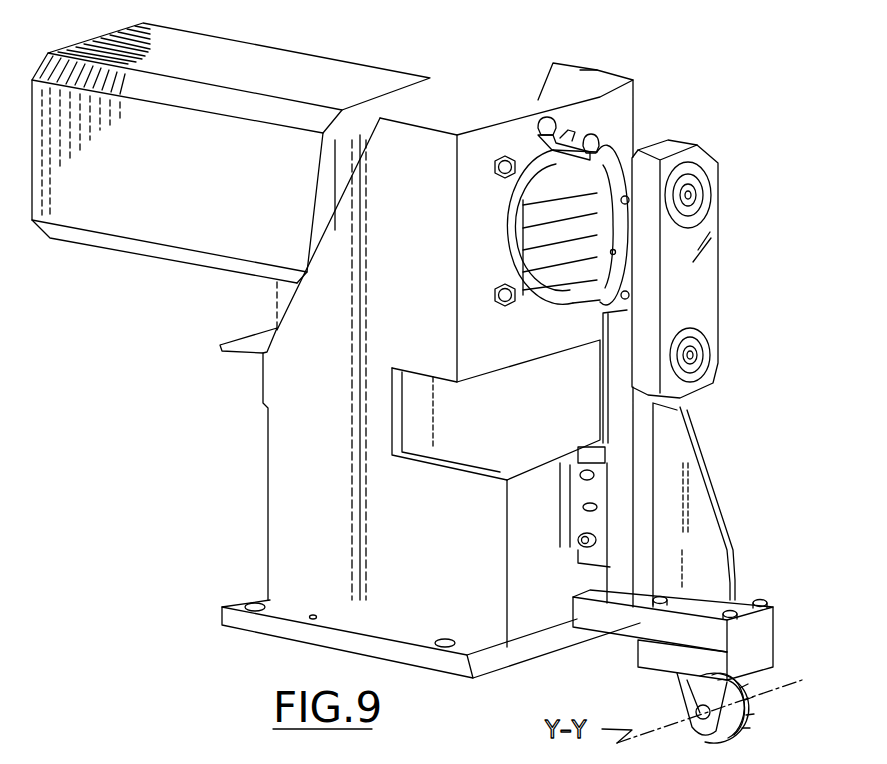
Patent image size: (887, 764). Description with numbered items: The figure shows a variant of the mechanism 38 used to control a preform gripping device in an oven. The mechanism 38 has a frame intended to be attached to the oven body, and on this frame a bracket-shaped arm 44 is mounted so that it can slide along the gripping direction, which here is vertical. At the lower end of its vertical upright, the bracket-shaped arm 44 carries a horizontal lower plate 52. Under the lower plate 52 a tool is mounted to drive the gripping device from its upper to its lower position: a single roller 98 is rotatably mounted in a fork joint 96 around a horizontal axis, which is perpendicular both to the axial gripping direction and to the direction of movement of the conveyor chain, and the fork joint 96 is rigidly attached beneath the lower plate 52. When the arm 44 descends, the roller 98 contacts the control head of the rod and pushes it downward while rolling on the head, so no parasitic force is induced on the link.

The mechanism 38 is at (670, 108).
The bracket-shaped arm 44 is at (735, 525).
The horizontal lower plate 52 is at (760, 630).
The fork joint 96 is at (692, 687).
The roller 98 is at (753, 717).